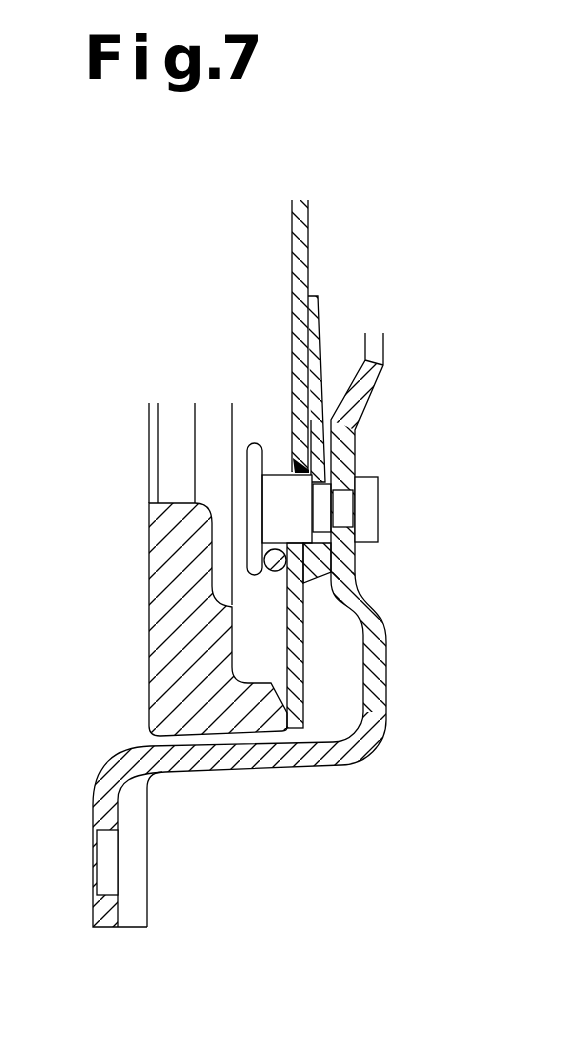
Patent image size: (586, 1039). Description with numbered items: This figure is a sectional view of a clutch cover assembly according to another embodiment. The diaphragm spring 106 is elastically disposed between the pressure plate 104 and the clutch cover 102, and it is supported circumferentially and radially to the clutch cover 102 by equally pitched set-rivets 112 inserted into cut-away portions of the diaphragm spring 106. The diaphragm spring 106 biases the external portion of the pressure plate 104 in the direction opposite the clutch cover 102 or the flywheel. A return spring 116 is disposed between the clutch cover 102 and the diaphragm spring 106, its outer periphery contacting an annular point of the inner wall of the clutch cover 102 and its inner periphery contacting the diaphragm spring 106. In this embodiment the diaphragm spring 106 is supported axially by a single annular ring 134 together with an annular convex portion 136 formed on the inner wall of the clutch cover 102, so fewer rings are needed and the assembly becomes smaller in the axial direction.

The clutch cover 102 is at (377, 675).
The pressure plate 104 is at (283, 713).
The diaphragm spring 106 is at (303, 640).
The set-rivet 112 is at (370, 503).
The return spring 116 is at (350, 436).
The annular ring 134 is at (272, 576).
The annular convex portion 136 is at (313, 557).